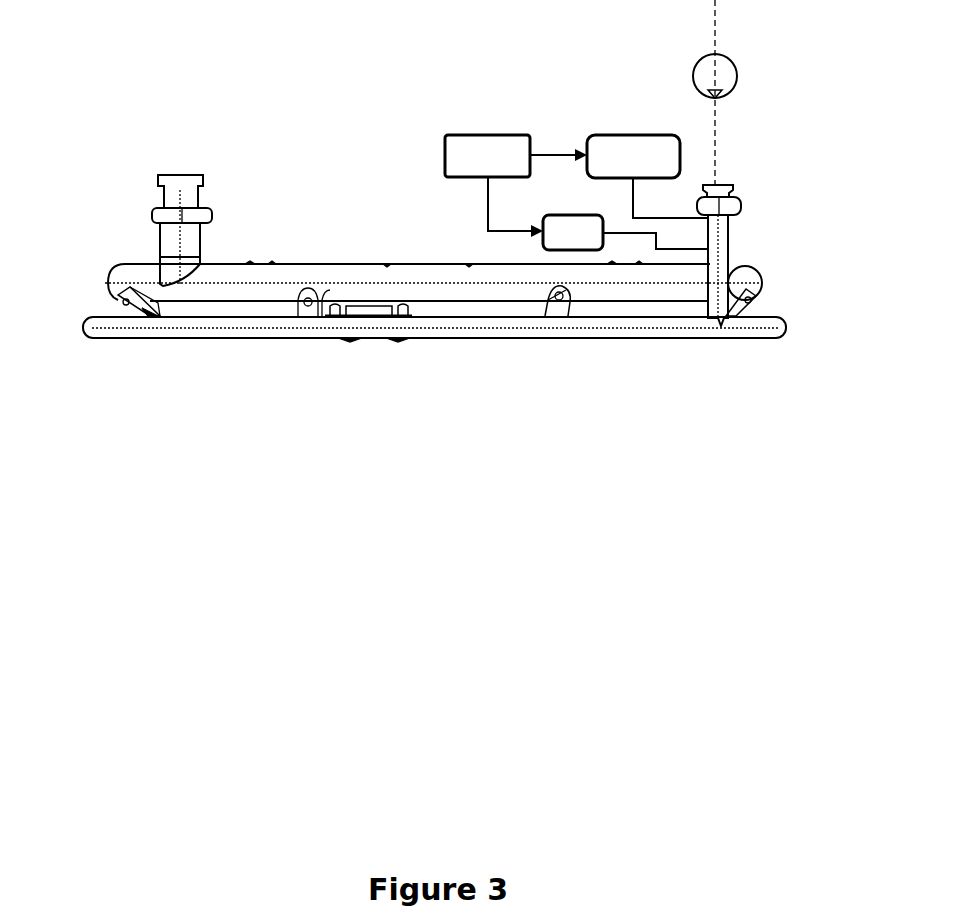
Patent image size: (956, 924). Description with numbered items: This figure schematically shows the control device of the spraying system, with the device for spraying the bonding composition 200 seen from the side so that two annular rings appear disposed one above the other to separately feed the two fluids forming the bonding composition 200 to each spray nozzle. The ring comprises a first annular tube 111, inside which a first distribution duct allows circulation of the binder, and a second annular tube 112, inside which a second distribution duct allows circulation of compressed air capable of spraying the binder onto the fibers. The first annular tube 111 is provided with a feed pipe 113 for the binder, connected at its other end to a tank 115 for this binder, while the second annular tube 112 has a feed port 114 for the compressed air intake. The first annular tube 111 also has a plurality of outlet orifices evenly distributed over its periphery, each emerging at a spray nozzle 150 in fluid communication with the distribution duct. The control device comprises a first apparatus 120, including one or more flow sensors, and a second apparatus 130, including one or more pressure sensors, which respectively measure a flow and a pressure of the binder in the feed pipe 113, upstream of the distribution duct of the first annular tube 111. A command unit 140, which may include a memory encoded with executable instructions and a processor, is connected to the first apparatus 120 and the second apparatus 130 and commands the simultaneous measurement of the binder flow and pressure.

The bonding composition 200 is at (315, 192).
The first annular tube 111 is at (634, 322).
The second annular tube 112 is at (740, 275).
The feed pipe 113 is at (716, 192).
The feed port 114 is at (160, 176).
The tank 115 is at (728, 58).
The first apparatus 120 is at (647, 176).
The second apparatus 130 is at (625, 232).
The command unit 140 is at (516, 186).
The spray nozzle 150 is at (537, 317).